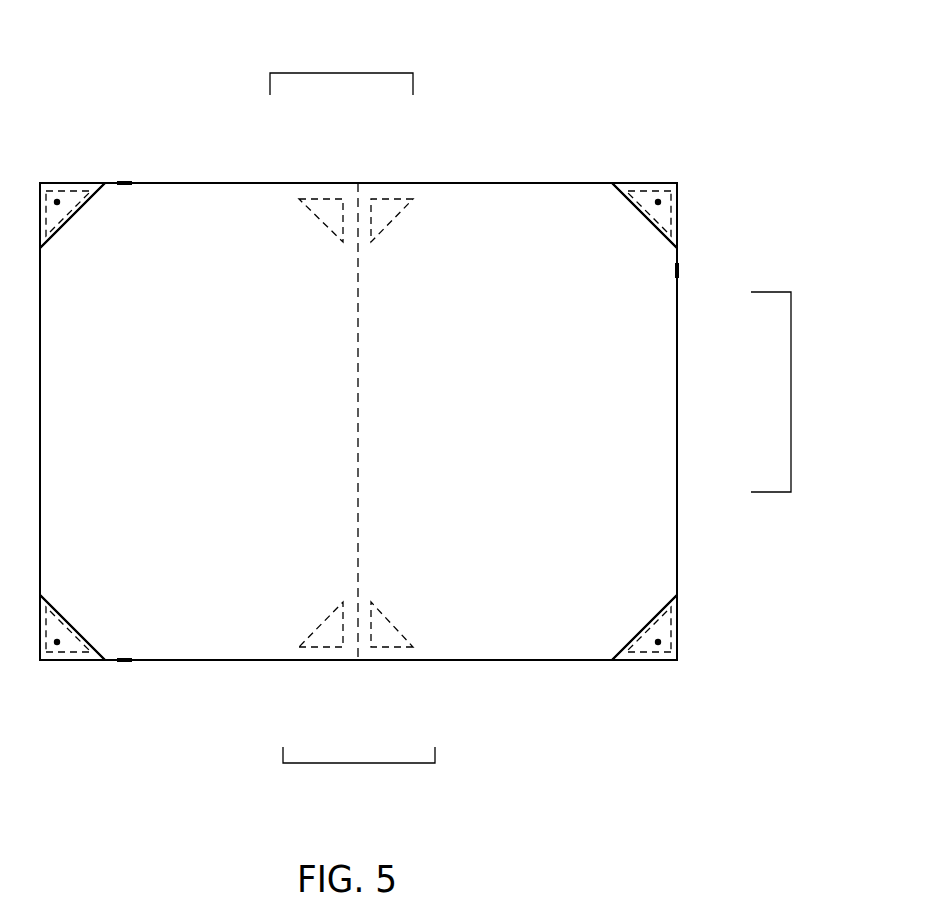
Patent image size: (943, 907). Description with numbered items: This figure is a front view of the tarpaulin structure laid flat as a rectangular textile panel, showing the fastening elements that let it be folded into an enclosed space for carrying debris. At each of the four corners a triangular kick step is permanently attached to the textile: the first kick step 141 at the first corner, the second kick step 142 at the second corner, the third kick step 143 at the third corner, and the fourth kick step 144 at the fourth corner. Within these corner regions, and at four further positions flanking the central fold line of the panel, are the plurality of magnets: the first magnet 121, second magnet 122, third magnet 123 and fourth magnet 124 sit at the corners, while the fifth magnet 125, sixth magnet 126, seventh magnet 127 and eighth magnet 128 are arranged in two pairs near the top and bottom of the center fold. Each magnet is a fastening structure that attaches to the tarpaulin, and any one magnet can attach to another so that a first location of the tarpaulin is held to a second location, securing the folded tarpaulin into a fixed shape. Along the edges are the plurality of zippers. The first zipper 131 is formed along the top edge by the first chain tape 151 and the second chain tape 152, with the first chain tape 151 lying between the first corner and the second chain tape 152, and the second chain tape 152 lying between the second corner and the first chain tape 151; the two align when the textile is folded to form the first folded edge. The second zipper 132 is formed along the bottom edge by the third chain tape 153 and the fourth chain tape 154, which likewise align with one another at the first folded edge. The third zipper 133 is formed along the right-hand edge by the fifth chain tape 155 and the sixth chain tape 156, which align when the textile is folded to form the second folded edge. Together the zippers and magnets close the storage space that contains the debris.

The first magnet 121 is at (67, 191).
The second magnet 122 is at (662, 212).
The third magnet 123 is at (666, 626).
The fourth magnet 124 is at (72, 645).
The fifth magnet 125 is at (329, 225).
The sixth magnet 126 is at (383, 220).
The seventh magnet 127 is at (325, 620).
The eighth magnet 128 is at (392, 620).
The first zipper 131 is at (343, 73).
The second zipper 132 is at (353, 763).
The third zipper 133 is at (791, 385).
The first kick step 141 is at (78, 213).
The second kick step 142 is at (643, 220).
The third kick step 143 is at (645, 620).
The fourth kick step 144 is at (75, 626).
The first chain tape 151 is at (226, 183).
The second chain tape 152 is at (421, 183).
The third chain tape 153 is at (260, 660).
The fourth chain tape 154 is at (452, 660).
The fifth chain tape 155 is at (677, 334).
The sixth chain tape 156 is at (677, 508).